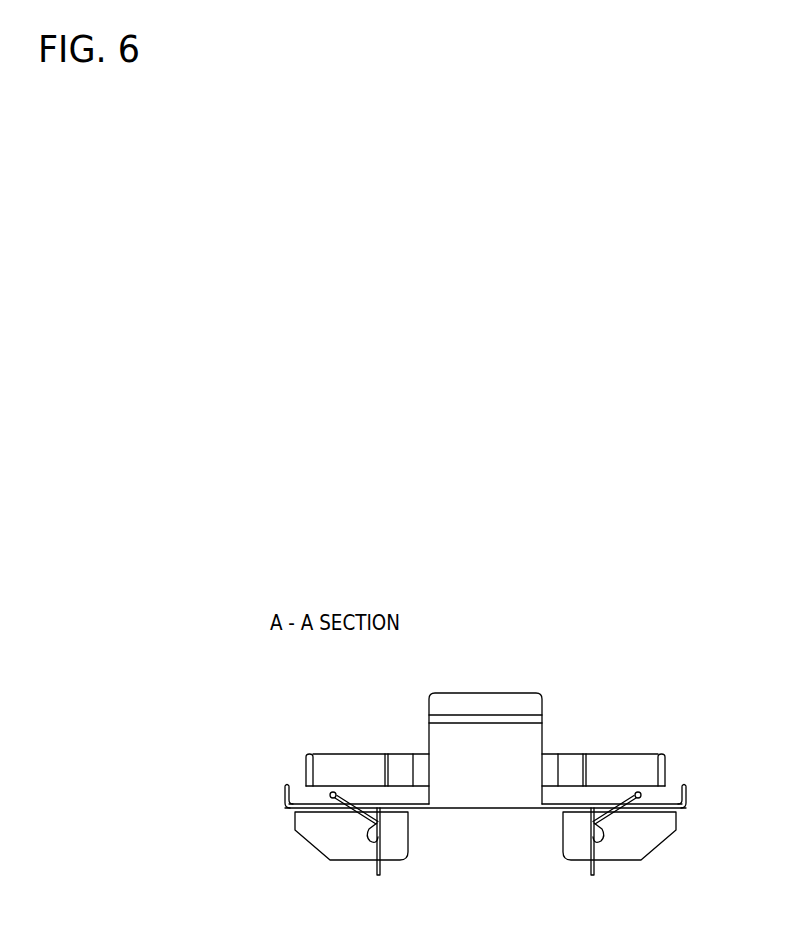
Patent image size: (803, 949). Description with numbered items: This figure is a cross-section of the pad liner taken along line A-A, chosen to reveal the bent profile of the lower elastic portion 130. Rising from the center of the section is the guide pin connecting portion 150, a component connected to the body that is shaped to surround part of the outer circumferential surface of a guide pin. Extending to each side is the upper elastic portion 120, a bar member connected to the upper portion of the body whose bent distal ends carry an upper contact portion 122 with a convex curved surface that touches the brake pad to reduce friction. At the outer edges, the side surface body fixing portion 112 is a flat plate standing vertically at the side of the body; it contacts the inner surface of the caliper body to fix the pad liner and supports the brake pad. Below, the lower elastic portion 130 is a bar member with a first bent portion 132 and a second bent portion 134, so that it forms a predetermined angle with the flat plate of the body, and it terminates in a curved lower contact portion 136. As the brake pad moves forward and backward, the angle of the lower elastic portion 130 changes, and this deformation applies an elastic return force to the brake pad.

The side surface body fixing portion 112 is at (687, 803).
The upper elastic portion 120 is at (608, 762).
The upper contact portion 122 is at (660, 753).
The lower elastic portion 130 is at (658, 770).
The first bent portion 132 is at (605, 823).
The second bent portion 134 is at (618, 823).
The lower contact portion 136 is at (635, 792).
The guide pin connecting portion 150 is at (490, 742).